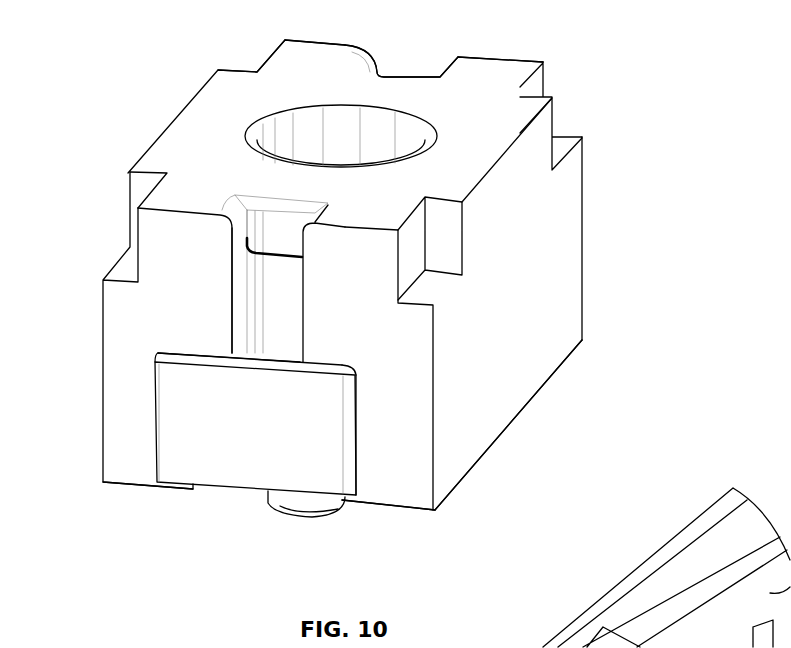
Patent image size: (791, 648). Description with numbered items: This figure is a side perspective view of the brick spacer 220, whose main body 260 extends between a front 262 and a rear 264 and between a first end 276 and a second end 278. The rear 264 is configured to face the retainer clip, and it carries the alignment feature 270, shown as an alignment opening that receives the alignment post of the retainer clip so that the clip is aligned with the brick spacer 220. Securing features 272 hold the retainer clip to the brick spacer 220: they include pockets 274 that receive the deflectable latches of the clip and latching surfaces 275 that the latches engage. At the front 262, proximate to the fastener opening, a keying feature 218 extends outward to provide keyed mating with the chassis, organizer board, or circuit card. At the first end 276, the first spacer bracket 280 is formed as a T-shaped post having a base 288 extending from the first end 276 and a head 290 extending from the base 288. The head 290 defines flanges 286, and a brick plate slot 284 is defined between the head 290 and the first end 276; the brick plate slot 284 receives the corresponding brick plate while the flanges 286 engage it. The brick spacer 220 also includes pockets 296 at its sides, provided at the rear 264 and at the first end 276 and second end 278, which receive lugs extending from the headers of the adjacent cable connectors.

The keying feature 218 is at (288, 500).
The brick spacer 220 is at (594, 46).
The main body 260 is at (568, 233).
The front 262 is at (508, 430).
The rear 264 is at (520, 107).
The alignment feature 270 is at (283, 130).
The securing features 272 is at (408, 64).
The pockets 274 is at (278, 283).
The latching surfaces 275 is at (285, 260).
The first end 276 is at (412, 490).
The second end 278 is at (582, 165).
The first spacer bracket 280 is at (207, 468).
The brick plate slots 284 is at (187, 350).
The flanges 286 is at (158, 353).
The base 288 is at (262, 352).
The head 290 is at (332, 457).
The pockets 296 is at (247, 55).